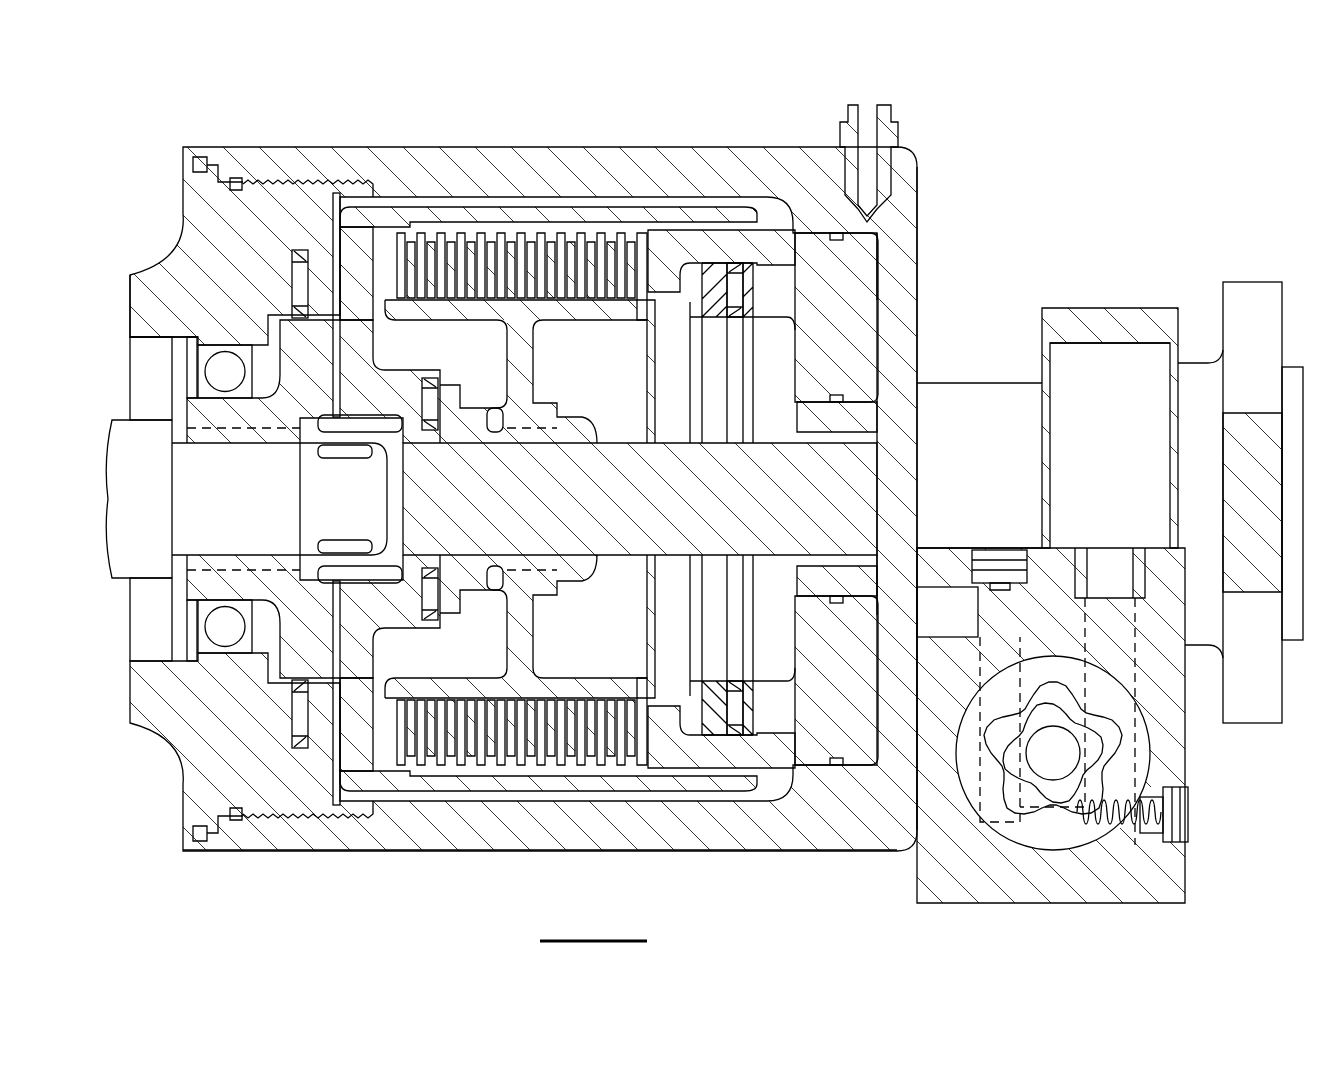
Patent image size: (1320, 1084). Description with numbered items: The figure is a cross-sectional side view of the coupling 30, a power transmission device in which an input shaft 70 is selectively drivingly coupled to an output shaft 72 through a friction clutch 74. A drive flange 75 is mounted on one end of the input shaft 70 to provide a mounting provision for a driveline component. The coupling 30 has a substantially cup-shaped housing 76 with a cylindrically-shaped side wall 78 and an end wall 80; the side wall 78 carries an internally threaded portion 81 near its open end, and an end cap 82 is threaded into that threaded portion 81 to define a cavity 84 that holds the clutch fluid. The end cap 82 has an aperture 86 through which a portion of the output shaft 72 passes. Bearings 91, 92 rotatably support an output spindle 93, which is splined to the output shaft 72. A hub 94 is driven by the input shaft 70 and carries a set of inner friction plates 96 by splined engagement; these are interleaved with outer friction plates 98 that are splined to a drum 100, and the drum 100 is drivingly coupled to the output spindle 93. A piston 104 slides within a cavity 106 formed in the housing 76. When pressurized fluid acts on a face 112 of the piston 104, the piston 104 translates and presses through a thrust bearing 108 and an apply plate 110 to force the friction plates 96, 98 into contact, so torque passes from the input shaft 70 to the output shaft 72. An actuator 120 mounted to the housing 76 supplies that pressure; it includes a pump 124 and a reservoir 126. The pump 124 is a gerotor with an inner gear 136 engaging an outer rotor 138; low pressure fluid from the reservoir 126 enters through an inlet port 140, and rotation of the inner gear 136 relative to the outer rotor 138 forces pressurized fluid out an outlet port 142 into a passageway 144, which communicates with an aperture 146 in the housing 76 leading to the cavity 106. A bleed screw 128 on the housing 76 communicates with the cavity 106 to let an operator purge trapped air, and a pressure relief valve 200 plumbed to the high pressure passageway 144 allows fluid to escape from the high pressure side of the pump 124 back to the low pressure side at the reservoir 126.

The coupling 30 is at (697, 133).
The input shaft 70 is at (878, 468).
The output shaft 72 is at (118, 428).
The friction clutch 74 is at (456, 198).
The drive flange 75 is at (1255, 720).
The housing 76 is at (772, 850).
The side wall 78 is at (435, 843).
The end wall 80 is at (905, 305).
The threaded portion 81 is at (273, 812).
The end cap 82 is at (197, 226).
The cavity 84 is at (578, 210).
The aperture 86 is at (153, 337).
The bearing 91 is at (203, 606).
The bearing 92 is at (372, 582).
The output spindle 93 is at (363, 346).
The hub 94 is at (522, 370).
The inner friction plates 96 is at (639, 295).
The outer friction plates 98 is at (634, 228).
The drum 100 is at (519, 218).
The piston 104 is at (803, 690).
The cavity 106 is at (878, 270).
The thrust bearing 108 is at (735, 700).
The apply plate 110 is at (680, 703).
The face 112 is at (898, 585).
The actuator 120 is at (1222, 868).
The pump 124 is at (1180, 610).
The reservoir 126 is at (1047, 373).
The bleed screw 128 is at (896, 112).
The inner gear 136 is at (997, 765).
The outer rotor 138 is at (1007, 695).
The inlet port 140 is at (1095, 685).
The outlet port 142 is at (1040, 817).
The passageway 144 is at (940, 583).
The aperture 146 is at (880, 628).
The pressure relief valve 200 is at (1135, 825).